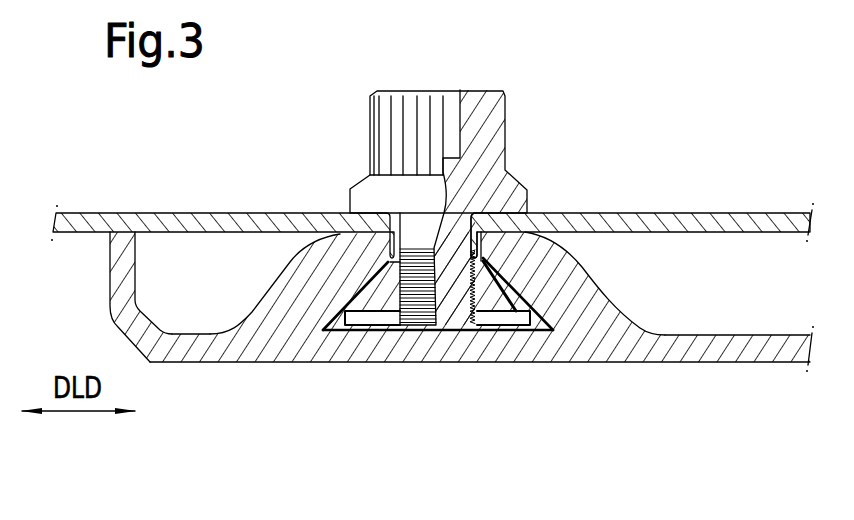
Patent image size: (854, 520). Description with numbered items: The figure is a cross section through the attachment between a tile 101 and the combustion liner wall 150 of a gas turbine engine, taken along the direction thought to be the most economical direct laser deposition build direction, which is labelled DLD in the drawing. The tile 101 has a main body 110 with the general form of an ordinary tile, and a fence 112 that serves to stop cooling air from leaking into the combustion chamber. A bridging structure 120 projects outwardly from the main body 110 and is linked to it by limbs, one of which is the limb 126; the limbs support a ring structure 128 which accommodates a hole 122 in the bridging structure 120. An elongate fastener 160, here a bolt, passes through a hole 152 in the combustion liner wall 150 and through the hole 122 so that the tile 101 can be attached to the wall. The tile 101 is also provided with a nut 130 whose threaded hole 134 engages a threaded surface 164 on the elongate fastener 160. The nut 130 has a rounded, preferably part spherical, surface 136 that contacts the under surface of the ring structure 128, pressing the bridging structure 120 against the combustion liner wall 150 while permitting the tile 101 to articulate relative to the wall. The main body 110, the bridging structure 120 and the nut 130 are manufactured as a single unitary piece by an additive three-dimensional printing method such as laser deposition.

The tile 101 is at (279, 387).
The main body 110 is at (645, 347).
The fence 112 is at (124, 280).
The bridging structure 120 is at (330, 280).
The hole 122 is at (478, 212).
The limb 126 is at (583, 326).
The ring structure 128 is at (505, 248).
The nut 130 is at (507, 317).
The threaded hole 134 is at (408, 293).
The rounded surface 136 is at (345, 237).
The combustion liner wall 150 is at (665, 223).
The hole 152 is at (392, 228).
The elongate fastener 160 is at (438, 132).
The threaded surface 164 is at (480, 288).